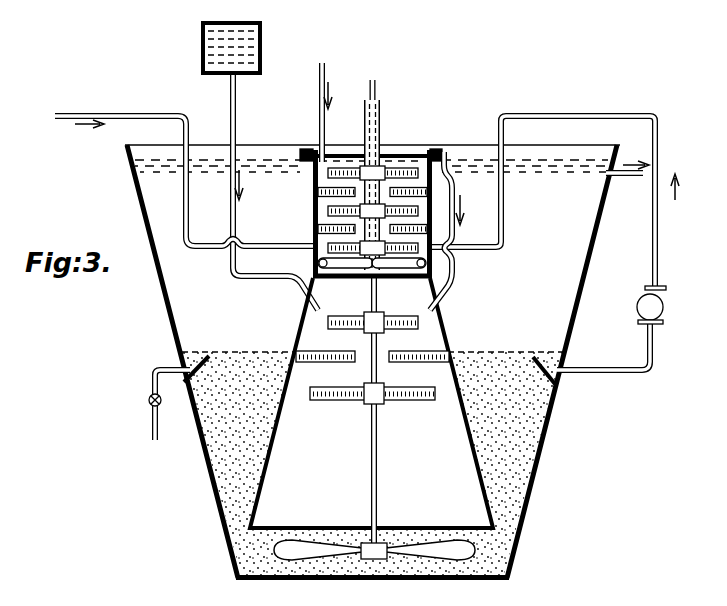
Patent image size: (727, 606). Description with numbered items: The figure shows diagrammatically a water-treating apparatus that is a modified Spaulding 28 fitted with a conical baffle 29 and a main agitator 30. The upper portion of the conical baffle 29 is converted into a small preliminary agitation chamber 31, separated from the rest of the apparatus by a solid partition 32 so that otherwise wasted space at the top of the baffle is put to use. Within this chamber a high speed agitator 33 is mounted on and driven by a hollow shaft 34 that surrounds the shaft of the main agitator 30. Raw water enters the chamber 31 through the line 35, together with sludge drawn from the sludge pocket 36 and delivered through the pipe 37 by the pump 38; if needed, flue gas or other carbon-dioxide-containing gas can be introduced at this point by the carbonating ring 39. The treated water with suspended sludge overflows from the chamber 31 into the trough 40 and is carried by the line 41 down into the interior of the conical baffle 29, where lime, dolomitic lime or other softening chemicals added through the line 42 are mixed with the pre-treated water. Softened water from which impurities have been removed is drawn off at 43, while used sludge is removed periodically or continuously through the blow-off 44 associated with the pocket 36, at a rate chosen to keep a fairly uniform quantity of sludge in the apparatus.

The modified Spaulding 28 is at (553, 421).
The conical baffle 29 is at (450, 321).
The agitator 30 is at (377, 429).
The preliminary agitation chamber 31 is at (313, 200).
The solid partition 32 is at (328, 278).
The high speed agitator 33 is at (393, 170).
The hollow shaft 34 is at (381, 121).
The line 35 is at (114, 113).
The sludge pocket 36 is at (193, 362).
The pipe 37 is at (503, 205).
The pump 38 is at (663, 307).
The carbonating ring 39 is at (402, 278).
The trough 40 is at (440, 152).
The line 41 is at (452, 185).
The line 42 is at (236, 108).
The draw-off 43 is at (633, 178).
The blow-off 44 is at (153, 375).